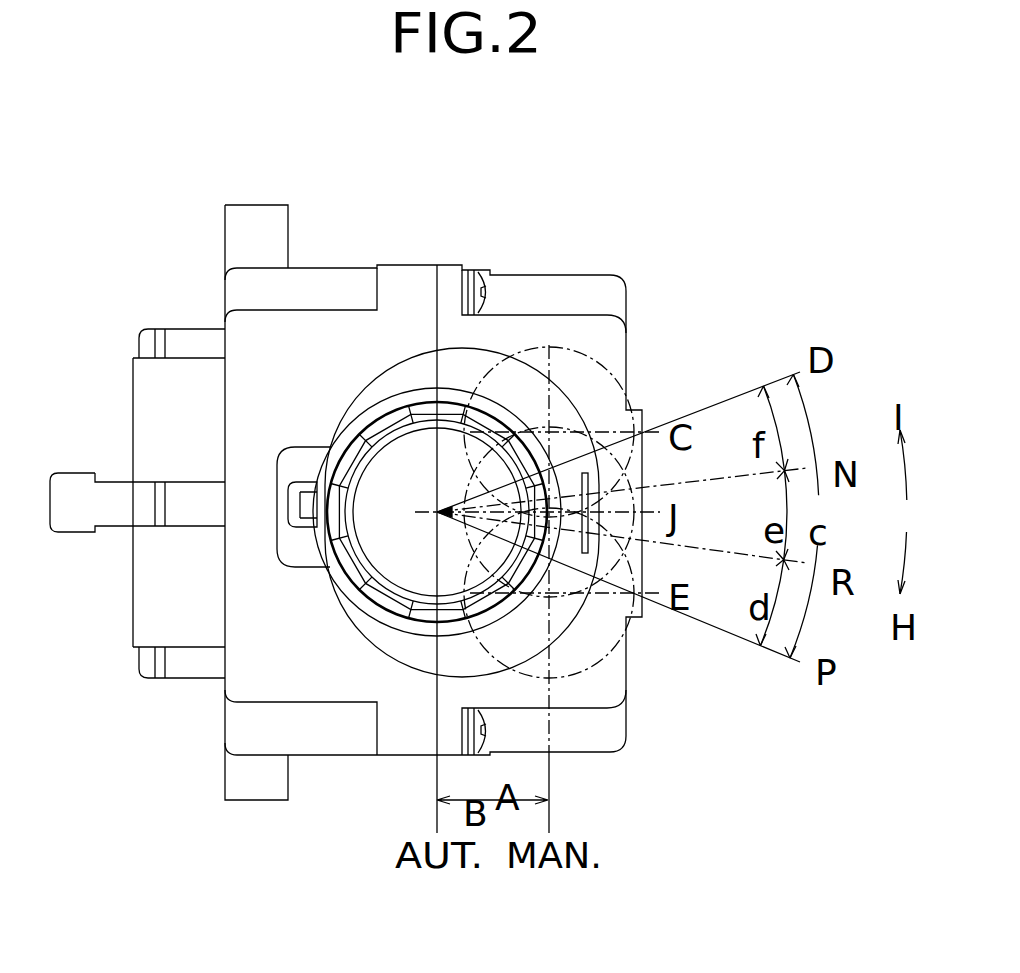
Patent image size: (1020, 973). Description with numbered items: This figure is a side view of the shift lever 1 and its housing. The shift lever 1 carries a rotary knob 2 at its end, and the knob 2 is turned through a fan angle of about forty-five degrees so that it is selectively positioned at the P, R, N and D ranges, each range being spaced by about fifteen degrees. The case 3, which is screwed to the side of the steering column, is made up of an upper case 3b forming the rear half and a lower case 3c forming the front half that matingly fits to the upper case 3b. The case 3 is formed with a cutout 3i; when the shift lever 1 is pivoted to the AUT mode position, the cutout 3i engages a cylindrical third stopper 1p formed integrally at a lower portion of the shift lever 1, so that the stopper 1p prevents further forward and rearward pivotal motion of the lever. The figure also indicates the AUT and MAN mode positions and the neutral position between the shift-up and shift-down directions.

The shift lever 1 is at (343, 600).
The third stopper 1p is at (300, 527).
The rotary knob 2 is at (397, 600).
The case 3 is at (588, 262).
The upper case 3b is at (612, 350).
The lower case 3c is at (385, 278).
The cutout 3i is at (280, 495).